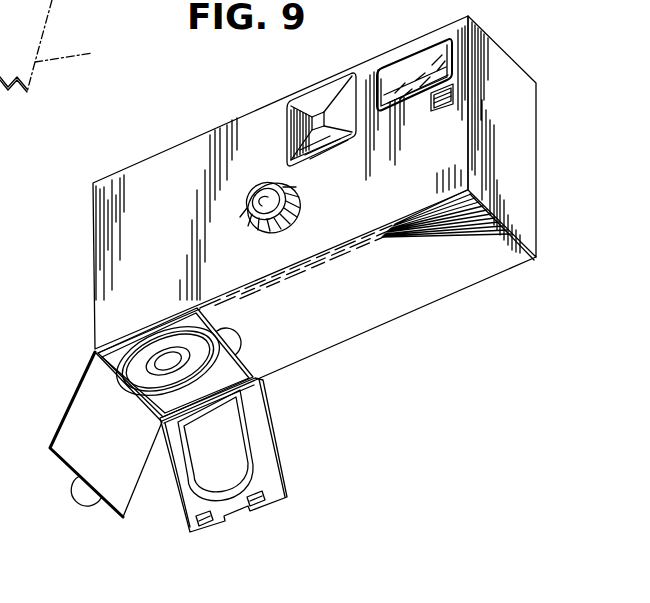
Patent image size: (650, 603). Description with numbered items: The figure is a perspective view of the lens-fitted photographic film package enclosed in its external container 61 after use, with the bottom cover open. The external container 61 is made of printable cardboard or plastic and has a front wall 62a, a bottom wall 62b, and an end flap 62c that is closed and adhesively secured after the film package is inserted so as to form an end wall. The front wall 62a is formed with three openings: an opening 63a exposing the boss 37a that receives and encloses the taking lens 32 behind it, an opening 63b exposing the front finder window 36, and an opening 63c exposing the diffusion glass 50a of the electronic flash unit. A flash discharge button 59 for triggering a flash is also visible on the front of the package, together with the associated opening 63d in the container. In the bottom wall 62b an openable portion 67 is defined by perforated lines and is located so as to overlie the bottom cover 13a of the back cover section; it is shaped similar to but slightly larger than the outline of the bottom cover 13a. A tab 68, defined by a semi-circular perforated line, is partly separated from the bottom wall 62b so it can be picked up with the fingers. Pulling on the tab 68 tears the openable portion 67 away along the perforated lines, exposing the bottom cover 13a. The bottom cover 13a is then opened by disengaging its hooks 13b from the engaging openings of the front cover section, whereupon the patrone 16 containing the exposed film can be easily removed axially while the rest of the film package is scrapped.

The external container 61 is at (167, 146).
The front wall 62a is at (125, 175).
The bottom wall 62b is at (388, 315).
The end flap 62c is at (508, 192).
The front finder window 36 is at (312, 112).
The opening 63b is at (330, 82).
The opening 63c is at (385, 66).
The diffusion glass 50a is at (422, 62).
The flash discharge button 59 is at (453, 96).
The indicator opening 63d is at (434, 108).
The taking lens 32 is at (292, 195).
The boss 37a is at (302, 205).
The opening 63a is at (257, 233).
The patrone 16 is at (147, 373).
The bottom cover 13a is at (180, 507).
The hooks 13b is at (197, 527).
The openable portion 67 is at (42, 495).
The tab 68 is at (78, 503).